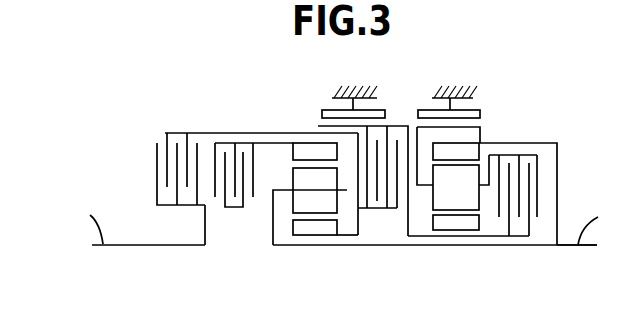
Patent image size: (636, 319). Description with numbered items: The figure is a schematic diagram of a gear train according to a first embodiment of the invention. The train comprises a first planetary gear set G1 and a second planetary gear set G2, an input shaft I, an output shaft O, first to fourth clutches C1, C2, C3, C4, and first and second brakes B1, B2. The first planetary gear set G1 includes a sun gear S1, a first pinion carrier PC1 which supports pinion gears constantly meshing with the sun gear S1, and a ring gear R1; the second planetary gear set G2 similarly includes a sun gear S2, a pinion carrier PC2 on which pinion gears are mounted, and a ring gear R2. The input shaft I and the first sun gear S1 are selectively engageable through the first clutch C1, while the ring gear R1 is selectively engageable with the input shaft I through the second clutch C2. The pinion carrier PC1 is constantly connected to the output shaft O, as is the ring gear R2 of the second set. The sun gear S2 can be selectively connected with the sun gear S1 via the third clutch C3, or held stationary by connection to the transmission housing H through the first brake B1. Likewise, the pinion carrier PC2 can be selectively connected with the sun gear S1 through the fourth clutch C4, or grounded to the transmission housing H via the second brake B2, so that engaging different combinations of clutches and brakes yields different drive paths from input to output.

The first clutch C1 is at (164, 132).
The second clutch C2 is at (220, 130).
The third clutch C3 is at (397, 121).
The fourth clutch C4 is at (541, 148).
The first brake B1 is at (322, 107).
The second brake B2 is at (483, 109).
The transmission housing H is at (446, 83).
The input shaft I is at (139, 219).
The output shaft O is at (588, 226).
The first planetary gear set G1 is at (285, 226).
The ring gear R1 is at (297, 153).
The sun gear S1 is at (367, 272).
The first pinion carrier PC1 is at (318, 190).
The second planetary gear set G2 is at (471, 218).
The ring gear R2 is at (445, 153).
The sun gear S2 is at (457, 243).
The pinion carrier PC2 is at (467, 185).